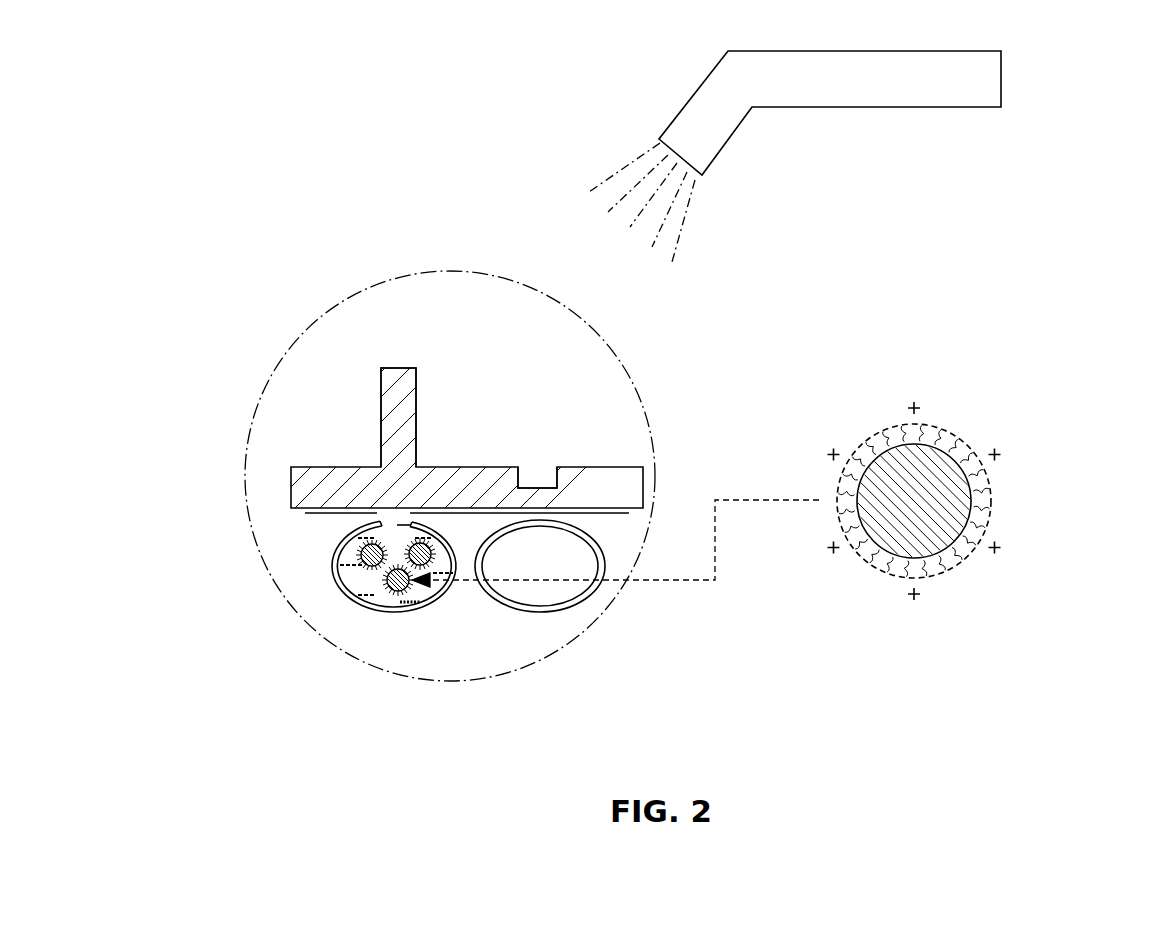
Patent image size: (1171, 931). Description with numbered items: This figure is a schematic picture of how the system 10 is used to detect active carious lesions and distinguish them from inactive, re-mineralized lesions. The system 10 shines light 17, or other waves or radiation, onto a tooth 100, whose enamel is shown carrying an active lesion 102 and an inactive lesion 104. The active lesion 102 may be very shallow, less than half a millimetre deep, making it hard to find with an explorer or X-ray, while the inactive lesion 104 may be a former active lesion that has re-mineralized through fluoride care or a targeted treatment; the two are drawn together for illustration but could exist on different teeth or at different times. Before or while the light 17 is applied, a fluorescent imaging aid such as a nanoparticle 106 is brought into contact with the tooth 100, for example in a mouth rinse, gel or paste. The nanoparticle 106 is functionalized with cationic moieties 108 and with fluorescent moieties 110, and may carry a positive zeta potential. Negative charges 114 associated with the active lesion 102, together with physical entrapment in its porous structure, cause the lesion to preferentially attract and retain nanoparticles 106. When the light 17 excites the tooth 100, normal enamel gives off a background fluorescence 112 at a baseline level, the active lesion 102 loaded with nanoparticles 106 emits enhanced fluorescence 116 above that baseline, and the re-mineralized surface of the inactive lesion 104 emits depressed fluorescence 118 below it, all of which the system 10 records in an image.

The system 10 is at (967, 108).
The light 17 is at (683, 233).
The tooth 100 is at (302, 555).
The active lesion 102 is at (355, 602).
The inactive lesion 104 is at (590, 603).
The nanoparticle 106 is at (367, 572).
The cationic moieties 108 is at (1008, 540).
The fluorescent moieties 110 is at (962, 412).
The background fluorescence 112 is at (317, 467).
The negative charges 114 is at (437, 580).
The enhanced fluorescence 116 is at (416, 385).
The depressed fluorescence 118 is at (538, 488).